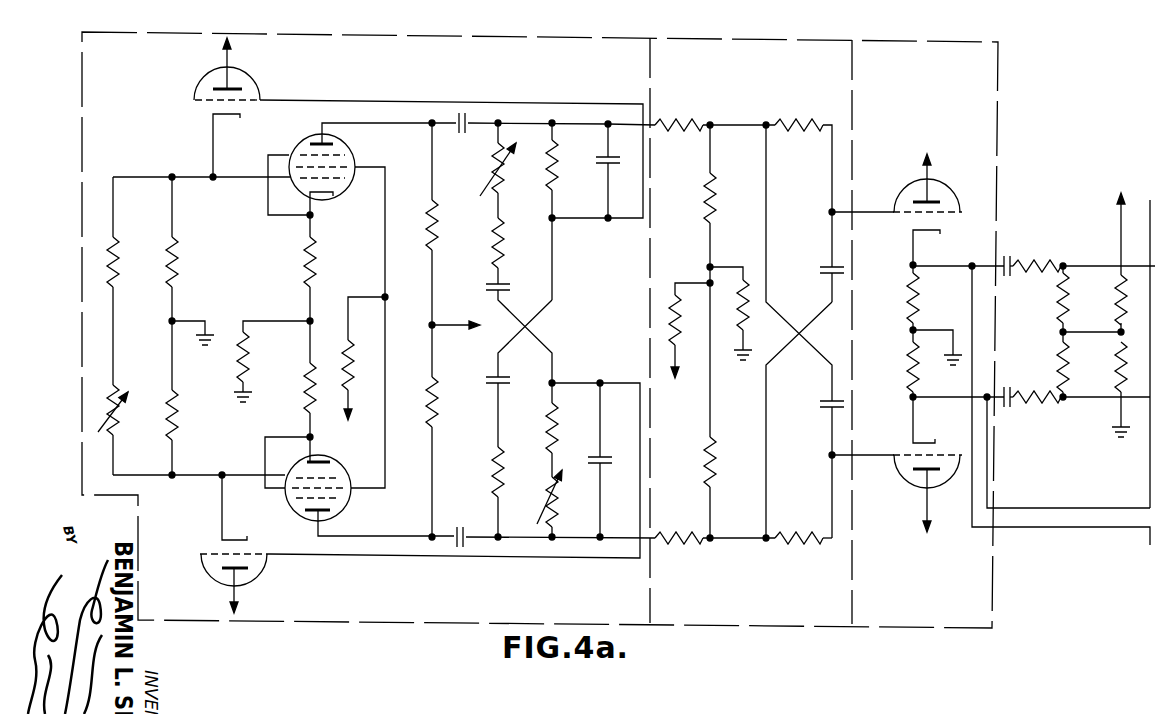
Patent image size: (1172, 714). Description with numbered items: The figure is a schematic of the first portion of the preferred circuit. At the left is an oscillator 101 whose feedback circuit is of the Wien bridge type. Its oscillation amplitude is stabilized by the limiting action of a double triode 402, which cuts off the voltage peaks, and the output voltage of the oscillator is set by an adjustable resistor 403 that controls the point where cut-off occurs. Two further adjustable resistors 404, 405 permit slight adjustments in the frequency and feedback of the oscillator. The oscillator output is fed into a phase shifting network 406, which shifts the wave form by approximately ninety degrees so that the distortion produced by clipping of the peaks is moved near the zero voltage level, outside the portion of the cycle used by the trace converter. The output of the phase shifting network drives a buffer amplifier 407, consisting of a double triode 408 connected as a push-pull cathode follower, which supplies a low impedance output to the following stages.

The oscillator 101 is at (380, 77).
The double triode 402 is at (197, 86).
The adjustable resistor 403 is at (160, 412).
The adjustable resistor 404 is at (495, 170).
The adjustable resistor 405 is at (548, 480).
The phase shifting network 406 is at (762, 84).
The buffer amplifier 407 is at (941, 86).
The double triode 408 is at (908, 183).